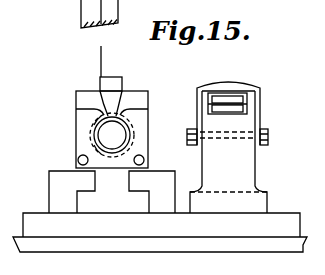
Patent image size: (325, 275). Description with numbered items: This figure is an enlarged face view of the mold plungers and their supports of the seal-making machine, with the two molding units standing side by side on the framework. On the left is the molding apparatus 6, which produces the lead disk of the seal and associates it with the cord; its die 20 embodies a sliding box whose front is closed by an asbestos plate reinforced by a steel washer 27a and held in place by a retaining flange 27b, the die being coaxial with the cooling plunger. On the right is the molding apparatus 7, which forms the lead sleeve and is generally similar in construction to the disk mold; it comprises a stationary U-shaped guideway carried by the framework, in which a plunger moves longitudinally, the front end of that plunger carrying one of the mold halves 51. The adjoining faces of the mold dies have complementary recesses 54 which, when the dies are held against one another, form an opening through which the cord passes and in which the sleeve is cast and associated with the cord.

The molding apparatus 6 is at (110, 122).
The die 20 is at (112, 135).
The steel washer 27a is at (96, 128).
The retaining flange 27b is at (93, 143).
The molding apparatus 7 is at (231, 145).
The mold half 51 is at (248, 112).
The complementary recesses 54 is at (228, 104).